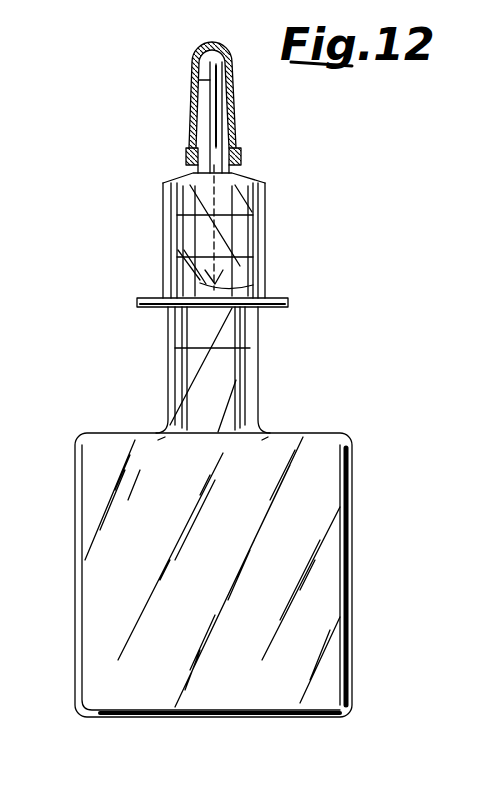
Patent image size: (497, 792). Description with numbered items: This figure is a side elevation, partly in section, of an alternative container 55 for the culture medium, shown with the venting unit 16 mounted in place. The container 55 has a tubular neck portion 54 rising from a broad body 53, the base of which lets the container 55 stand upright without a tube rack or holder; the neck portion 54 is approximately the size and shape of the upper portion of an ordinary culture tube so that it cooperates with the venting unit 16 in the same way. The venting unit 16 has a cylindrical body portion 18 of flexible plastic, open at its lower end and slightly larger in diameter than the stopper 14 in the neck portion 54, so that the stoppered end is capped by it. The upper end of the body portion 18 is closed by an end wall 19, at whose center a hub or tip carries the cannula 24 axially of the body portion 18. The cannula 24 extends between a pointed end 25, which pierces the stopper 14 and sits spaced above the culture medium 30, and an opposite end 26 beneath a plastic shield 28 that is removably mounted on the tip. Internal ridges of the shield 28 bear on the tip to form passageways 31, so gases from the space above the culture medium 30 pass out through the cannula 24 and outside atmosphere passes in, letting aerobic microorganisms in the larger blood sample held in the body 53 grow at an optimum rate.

The stopper 14 is at (241, 262).
The venting unit 16 is at (303, 187).
The body portion 18 is at (164, 250).
The end wall 19 is at (178, 178).
The cannula 24 is at (219, 112).
The pointed end 25 is at (238, 284).
The end 26 is at (198, 80).
The shield 28 is at (191, 112).
The culture medium 30 is at (197, 347).
The passageways 31 is at (236, 150).
The container body 53 is at (333, 550).
The tubular neck portion 54 is at (257, 373).
The container 55 is at (140, 392).